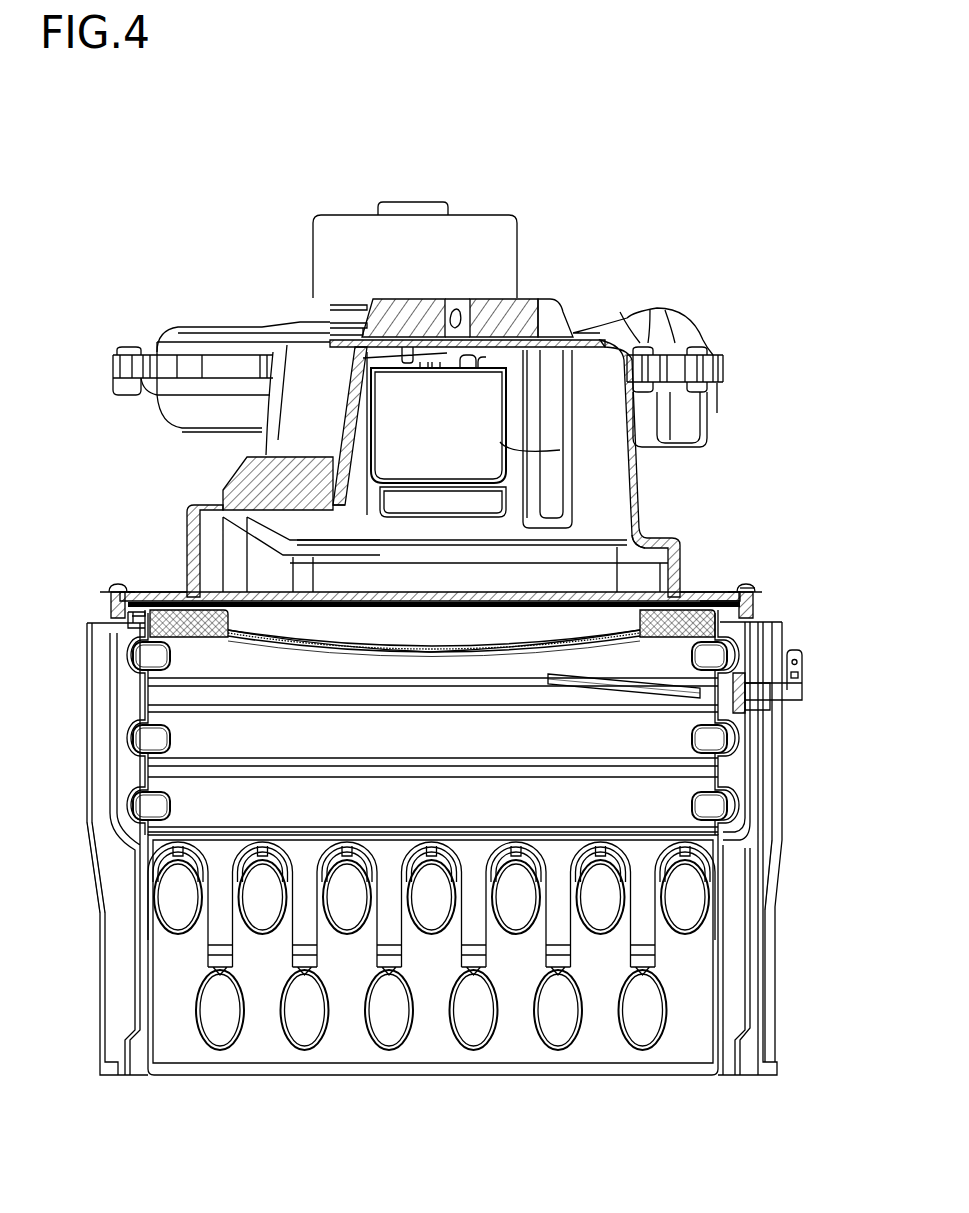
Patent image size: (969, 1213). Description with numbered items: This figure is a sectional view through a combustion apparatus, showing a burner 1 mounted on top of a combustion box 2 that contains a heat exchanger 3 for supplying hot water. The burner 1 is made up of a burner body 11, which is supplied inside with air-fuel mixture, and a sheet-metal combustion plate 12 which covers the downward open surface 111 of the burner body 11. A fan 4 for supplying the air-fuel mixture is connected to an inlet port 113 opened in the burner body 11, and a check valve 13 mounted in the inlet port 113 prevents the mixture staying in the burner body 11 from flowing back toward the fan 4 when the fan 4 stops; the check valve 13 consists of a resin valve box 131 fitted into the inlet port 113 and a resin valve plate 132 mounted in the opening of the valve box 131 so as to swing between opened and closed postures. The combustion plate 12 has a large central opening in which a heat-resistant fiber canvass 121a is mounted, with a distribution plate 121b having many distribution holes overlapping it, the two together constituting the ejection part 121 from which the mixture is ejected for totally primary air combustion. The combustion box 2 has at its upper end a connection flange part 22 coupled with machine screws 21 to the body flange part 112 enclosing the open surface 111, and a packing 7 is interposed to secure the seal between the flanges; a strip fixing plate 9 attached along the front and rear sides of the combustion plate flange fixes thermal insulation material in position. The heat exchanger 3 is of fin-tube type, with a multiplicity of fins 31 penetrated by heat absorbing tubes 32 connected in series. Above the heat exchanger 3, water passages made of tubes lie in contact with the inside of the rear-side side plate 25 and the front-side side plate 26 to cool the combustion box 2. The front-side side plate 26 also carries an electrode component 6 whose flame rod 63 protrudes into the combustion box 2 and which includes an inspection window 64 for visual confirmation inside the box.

The burner 1 is at (660, 495).
The combustion box 2 is at (722, 919).
The heat exchanger 3 is at (398, 846).
The fan 4 is at (600, 318).
The electrode component 6 is at (757, 713).
The packing 7 is at (748, 588).
The fixing plate 9 is at (168, 597).
The burner body 11 is at (642, 525).
The combustion plate 12 is at (630, 633).
The check valve 13 is at (392, 452).
The machine screws 21 is at (117, 586).
The connection flange part 22 is at (132, 620).
The rear-side side plate 25 is at (145, 864).
The front-side side plate 26 is at (768, 837).
The fins 31 is at (538, 870).
The heat absorbing tubes 32 is at (276, 876).
The flame rod 63 is at (610, 688).
The inspection window 64 is at (760, 693).
The open surface 111 is at (398, 607).
The body flange part 112 is at (715, 592).
The inlet port 113 is at (510, 447).
The ejection part 121 is at (308, 746).
The canvass 121a is at (330, 650).
The distribution plate 121b is at (413, 640).
The valve box 131 is at (497, 477).
The valve plate 132 is at (453, 470).